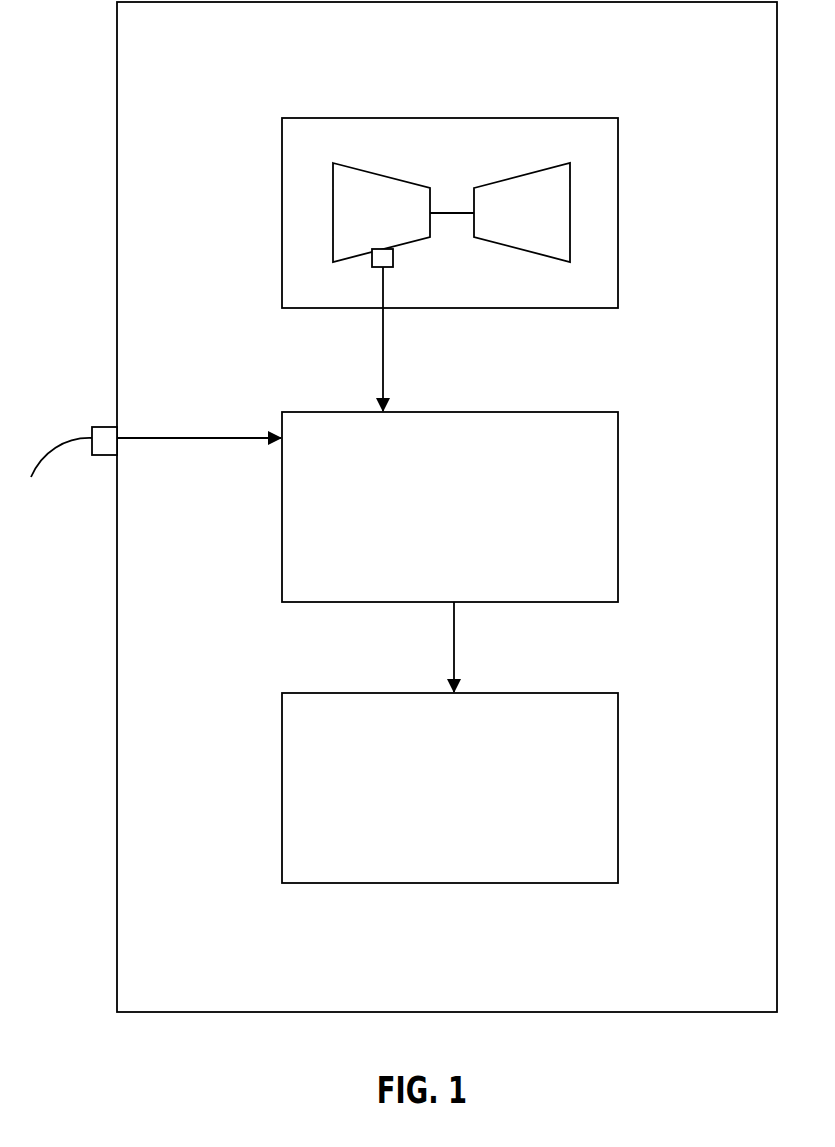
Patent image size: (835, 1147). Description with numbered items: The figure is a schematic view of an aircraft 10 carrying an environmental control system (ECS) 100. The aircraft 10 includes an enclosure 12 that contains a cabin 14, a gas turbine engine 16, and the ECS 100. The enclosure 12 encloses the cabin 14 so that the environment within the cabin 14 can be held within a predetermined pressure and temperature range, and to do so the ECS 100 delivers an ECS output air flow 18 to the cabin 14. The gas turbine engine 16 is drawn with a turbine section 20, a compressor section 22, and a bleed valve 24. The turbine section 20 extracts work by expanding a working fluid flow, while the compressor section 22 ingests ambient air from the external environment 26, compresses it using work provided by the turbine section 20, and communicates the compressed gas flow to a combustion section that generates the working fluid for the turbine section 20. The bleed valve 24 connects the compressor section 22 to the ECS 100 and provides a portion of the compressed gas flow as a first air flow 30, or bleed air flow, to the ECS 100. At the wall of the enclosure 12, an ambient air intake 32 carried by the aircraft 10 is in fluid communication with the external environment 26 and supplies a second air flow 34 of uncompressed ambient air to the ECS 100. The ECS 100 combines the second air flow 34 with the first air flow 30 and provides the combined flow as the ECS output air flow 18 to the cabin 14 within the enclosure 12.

The aircraft 10 is at (119, 1032).
The enclosure 12 is at (117, 738).
The cabin 14 is at (442, 797).
The gas turbine engine 16 is at (555, 118).
The ECS output air flow 18 is at (454, 647).
The turbine section 20 is at (512, 222).
The compressor section 22 is at (367, 222).
The bleed valve 24 is at (393, 253).
The external environment 26 is at (41, 262).
The first air flow 30 is at (383, 352).
The ambient air intake 32 is at (105, 455).
The second air flow 34 is at (182, 438).
The environmental control system 100 is at (435, 518).